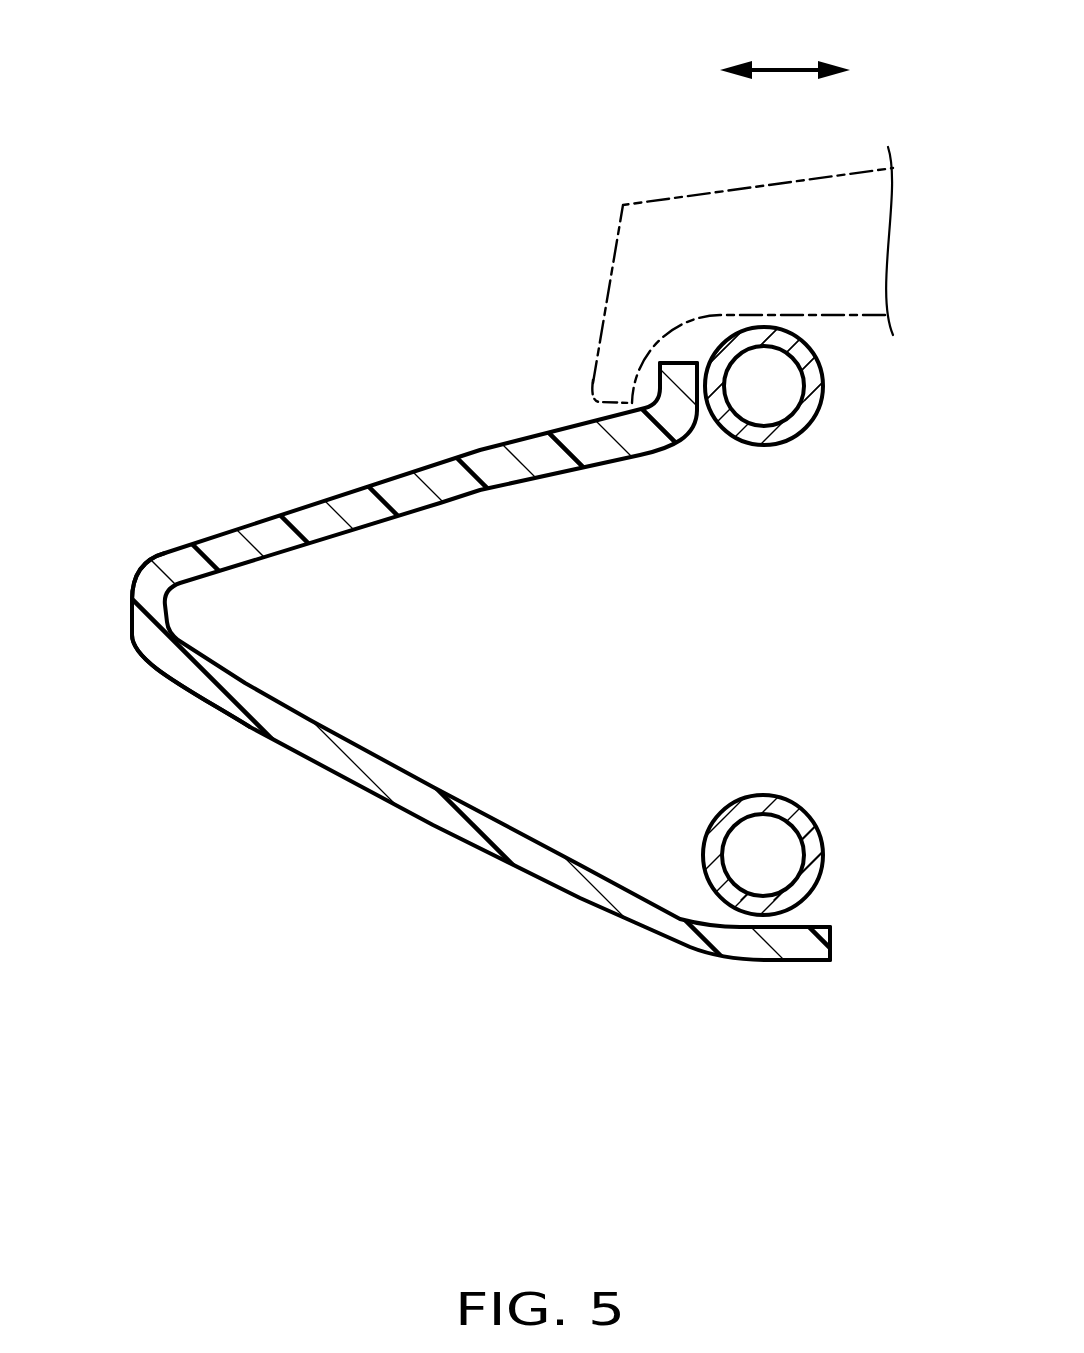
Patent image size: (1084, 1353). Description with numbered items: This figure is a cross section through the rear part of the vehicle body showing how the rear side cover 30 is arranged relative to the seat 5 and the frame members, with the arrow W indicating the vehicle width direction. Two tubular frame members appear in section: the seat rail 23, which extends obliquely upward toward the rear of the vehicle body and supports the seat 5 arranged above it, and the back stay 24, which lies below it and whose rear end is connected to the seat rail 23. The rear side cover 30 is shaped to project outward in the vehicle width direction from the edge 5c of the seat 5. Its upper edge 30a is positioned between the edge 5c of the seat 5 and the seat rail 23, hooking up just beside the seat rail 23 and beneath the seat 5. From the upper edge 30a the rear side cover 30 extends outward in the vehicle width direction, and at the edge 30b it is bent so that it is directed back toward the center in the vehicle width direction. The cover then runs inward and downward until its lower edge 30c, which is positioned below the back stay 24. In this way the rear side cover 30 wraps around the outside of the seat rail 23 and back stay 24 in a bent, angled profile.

The seat 5 is at (748, 192).
The edge of the seat 5c is at (588, 382).
The rear side cover 30 is at (392, 478).
The upper edge of the rear side cover 30a is at (680, 372).
The edge of the rear side cover 30b is at (131, 604).
The lower edge of the rear side cover 30c is at (818, 928).
The seat rail 23 is at (771, 446).
The back stay 24 is at (772, 795).
The width direction W is at (788, 67).